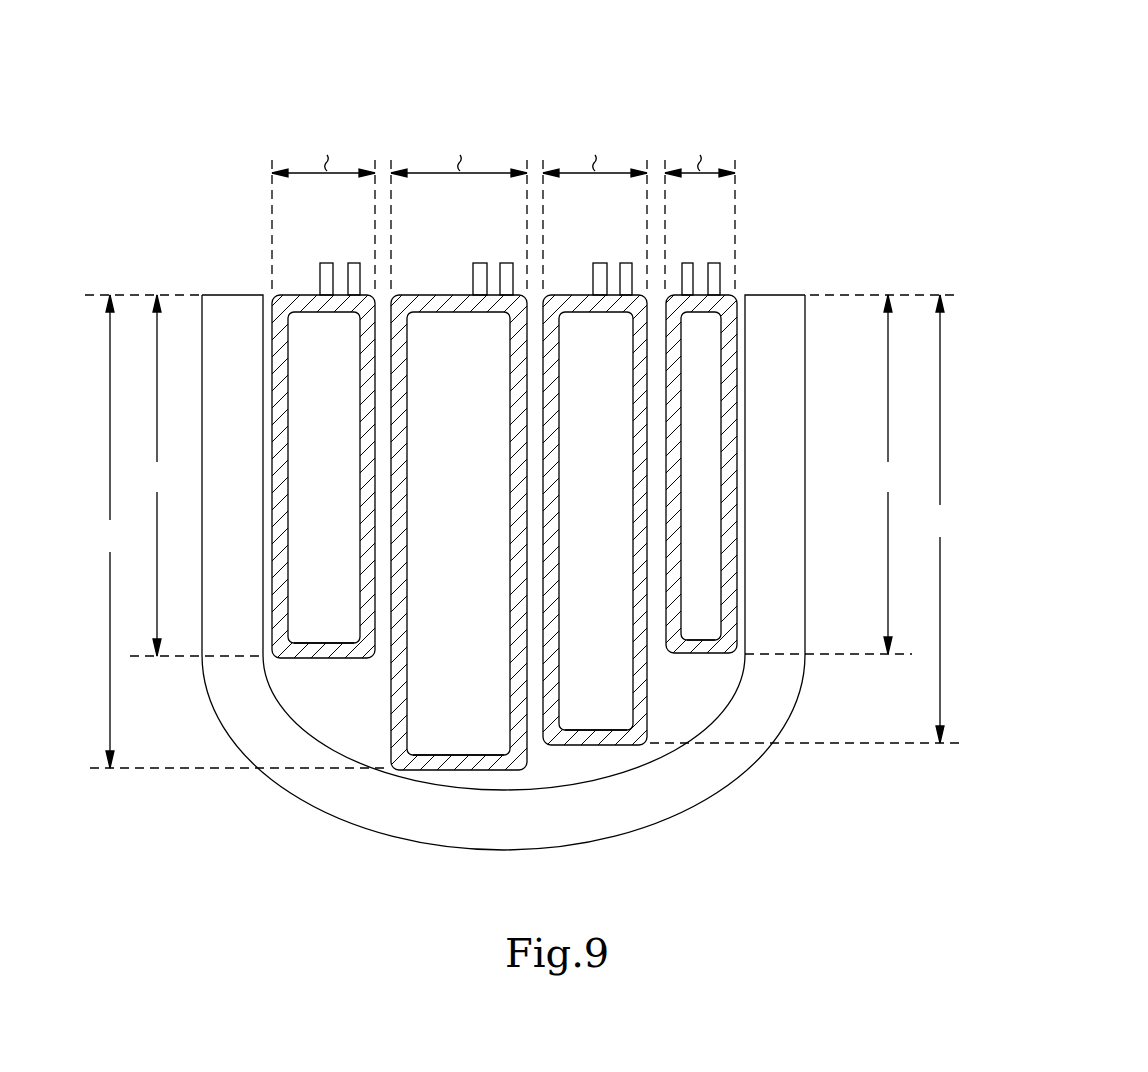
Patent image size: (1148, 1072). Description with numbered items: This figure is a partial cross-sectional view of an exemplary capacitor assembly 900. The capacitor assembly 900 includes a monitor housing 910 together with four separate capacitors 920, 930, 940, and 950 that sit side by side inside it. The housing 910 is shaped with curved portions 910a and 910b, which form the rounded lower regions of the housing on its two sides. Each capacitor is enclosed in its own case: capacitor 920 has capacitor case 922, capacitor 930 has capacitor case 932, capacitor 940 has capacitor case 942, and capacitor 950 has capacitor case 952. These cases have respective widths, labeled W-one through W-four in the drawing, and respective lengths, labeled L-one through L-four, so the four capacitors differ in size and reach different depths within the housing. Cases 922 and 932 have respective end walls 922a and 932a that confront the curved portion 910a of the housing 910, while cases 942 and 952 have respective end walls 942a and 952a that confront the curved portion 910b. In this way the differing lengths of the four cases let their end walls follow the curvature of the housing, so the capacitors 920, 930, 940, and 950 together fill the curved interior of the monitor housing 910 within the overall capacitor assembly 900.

The capacitor assembly 900 is at (238, 44).
The monitor housing 910 is at (793, 281).
The curved portion 910a is at (287, 760).
The curved portion 910b is at (727, 760).
The capacitor 920 is at (343, 532).
The capacitor case 922 is at (276, 404).
The end wall 922a is at (328, 640).
The capacitor 930 is at (474, 532).
The capacitor case 932 is at (394, 404).
The end wall 932a is at (462, 752).
The capacitor 940 is at (609, 532).
The capacitor case 942 is at (546, 404).
The end wall 942a is at (596, 728).
The capacitor 950 is at (718, 532).
The capacitor case 952 is at (722, 404).
The end wall 952a is at (704, 638).